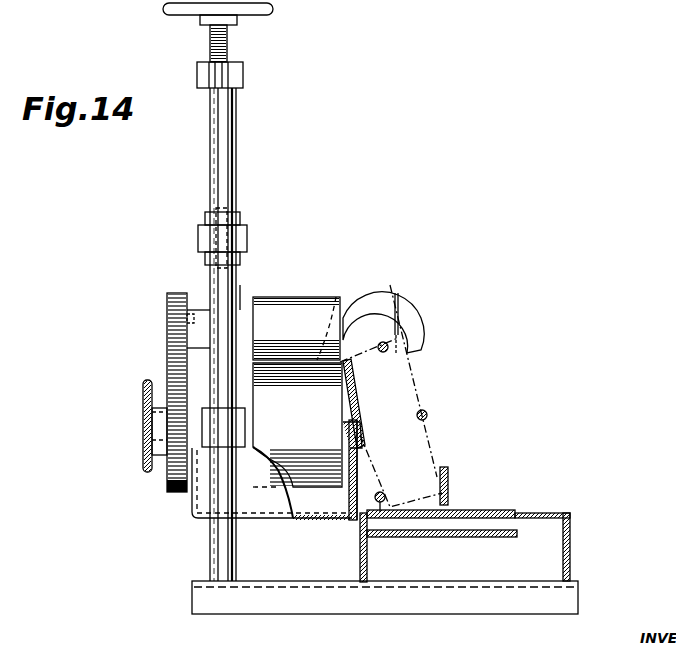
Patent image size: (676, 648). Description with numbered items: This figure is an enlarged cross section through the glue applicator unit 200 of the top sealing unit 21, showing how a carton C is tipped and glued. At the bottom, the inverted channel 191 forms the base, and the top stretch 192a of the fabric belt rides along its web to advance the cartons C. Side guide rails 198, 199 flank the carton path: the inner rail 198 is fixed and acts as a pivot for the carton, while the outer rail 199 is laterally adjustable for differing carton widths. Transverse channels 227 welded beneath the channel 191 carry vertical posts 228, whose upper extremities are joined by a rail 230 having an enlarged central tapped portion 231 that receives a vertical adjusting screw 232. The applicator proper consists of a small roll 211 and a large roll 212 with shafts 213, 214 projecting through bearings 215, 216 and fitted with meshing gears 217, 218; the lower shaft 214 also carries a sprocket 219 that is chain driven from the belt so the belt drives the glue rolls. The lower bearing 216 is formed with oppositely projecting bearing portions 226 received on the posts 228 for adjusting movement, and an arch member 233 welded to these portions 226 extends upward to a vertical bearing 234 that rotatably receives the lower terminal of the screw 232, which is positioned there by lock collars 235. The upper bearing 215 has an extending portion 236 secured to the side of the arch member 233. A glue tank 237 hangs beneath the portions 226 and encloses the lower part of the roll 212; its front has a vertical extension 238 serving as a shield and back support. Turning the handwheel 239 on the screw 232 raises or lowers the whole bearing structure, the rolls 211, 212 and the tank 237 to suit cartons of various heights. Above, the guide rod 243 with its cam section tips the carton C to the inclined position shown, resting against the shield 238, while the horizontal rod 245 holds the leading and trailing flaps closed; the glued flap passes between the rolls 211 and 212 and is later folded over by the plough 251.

The handwheel 239 is at (185, 15).
The vertical adjusting screw 232 is at (222, 44).
The enlarged central tapped portion 231 is at (230, 62).
The rail 230 is at (243, 78).
The vertical posts 228 is at (212, 573).
The lock collars 235 is at (207, 262).
The vertical bearing 234 is at (247, 238).
The arch member 233 is at (214, 270).
The extending portion 236 is at (243, 290).
The upper roll bearing 215 is at (196, 308).
The gear 217 is at (167, 298).
The glue applicator unit 200 is at (162, 310).
The shaft 213 is at (168, 326).
The small roll 211 is at (301, 297).
The large roll 212 is at (297, 440).
The lower bearing 216 is at (203, 410).
The lower shaft 214 is at (143, 415).
The sprocket 219 is at (148, 446).
The gear 218 is at (167, 480).
The bearing portions 226 is at (185, 494).
The glue tank 237 is at (192, 520).
The plough 251 is at (420, 331).
The horizontal rod 245 is at (386, 343).
The vertical extension 238 is at (355, 380).
The cartons C is at (423, 448).
The guide rod 243 is at (428, 414).
The side guide rail 198 is at (381, 503).
The side guide rail 199 is at (448, 490).
The top stretch of the belt 192a is at (513, 511).
The inverted channel 191 is at (571, 519).
The top sealing unit 21 is at (582, 538).
The transverse channels 227 is at (320, 614).